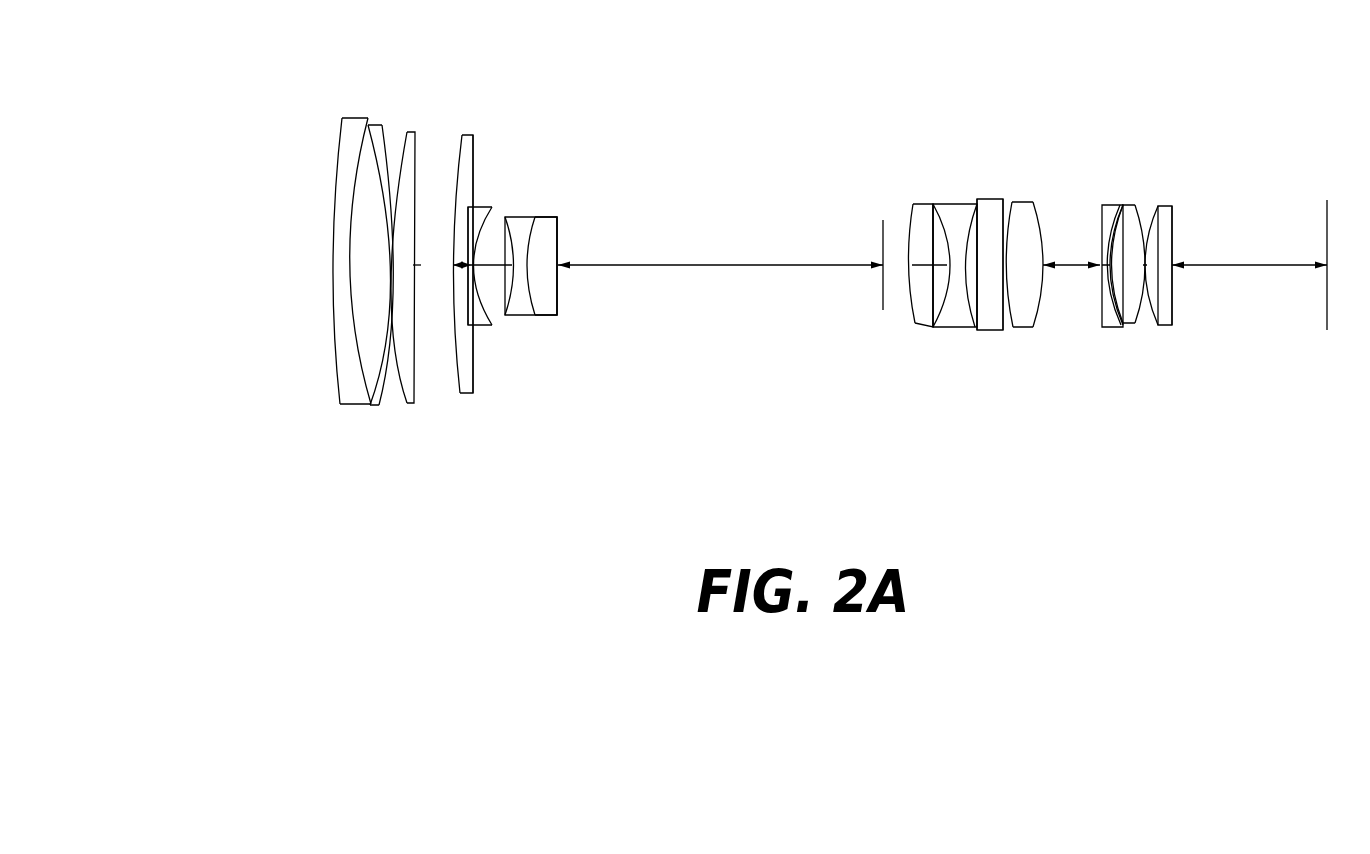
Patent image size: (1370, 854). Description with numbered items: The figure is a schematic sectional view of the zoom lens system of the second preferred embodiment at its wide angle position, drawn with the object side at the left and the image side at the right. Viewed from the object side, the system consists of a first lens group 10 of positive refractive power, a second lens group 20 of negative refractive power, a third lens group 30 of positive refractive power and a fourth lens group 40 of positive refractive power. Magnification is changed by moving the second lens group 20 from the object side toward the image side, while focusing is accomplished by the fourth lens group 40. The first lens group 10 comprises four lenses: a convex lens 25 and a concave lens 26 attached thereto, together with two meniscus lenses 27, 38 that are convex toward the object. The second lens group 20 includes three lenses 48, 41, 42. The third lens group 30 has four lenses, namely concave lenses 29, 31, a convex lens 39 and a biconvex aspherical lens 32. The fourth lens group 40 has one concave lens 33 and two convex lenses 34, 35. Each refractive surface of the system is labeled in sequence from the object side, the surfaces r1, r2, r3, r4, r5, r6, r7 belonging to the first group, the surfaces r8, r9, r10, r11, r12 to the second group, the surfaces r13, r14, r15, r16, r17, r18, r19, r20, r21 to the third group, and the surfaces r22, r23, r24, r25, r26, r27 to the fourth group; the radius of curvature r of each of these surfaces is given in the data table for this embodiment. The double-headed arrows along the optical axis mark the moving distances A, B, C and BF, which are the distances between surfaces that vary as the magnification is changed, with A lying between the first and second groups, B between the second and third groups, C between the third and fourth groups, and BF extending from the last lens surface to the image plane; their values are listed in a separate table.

The first lens group 10 is at (495, 53).
The second lens group 20 is at (480, 153).
The third lens group 30 is at (1087, 147).
The fourth lens group 40 is at (1030, 437).
The convex lens 25 is at (362, 254).
The concave lens 26 is at (321, 260).
The meniscus lens 27 is at (409, 266).
The meniscus lens 38 is at (475, 256).
The lens 48 is at (495, 278).
The lens 41 is at (545, 260).
The lens 42 is at (580, 270).
The concave lens 29 is at (888, 270).
The convex lens 39 is at (950, 257).
The concave lens 31 is at (997, 257).
The biconvex aspherical lens 32 is at (1037, 251).
The concave lens 33 is at (1098, 263).
The convex lens 34 is at (1145, 295).
The convex lens 35 is at (1200, 276).
The refractive surface r1 is at (332, 193).
The refractive surface r2 is at (338, 150).
The refractive surface r3 is at (378, 148).
The refractive surface r4 is at (393, 137).
The refractive surface r5 is at (412, 132).
The refractive surface r6 is at (451, 157).
The refractive surface r7 is at (473, 133).
The refractive surface r8 is at (476, 207).
The refractive surface r9 is at (483, 233).
The refractive surface r10 is at (512, 250).
The refractive surface r11 is at (533, 230).
The refractive surface r12 is at (557, 237).
The refractive surface r13 is at (880, 243).
The refractive surface r14 is at (910, 225).
The refractive surface r15 is at (930, 222).
The refractive surface r16 is at (945, 220).
The refractive surface r17 is at (970, 222).
The refractive surface r18 is at (980, 222).
The refractive surface r19 is at (1005, 222).
The refractive surface r20 is at (1013, 222).
The refractive surface r21 is at (1043, 245).
The refractive surface r22 is at (1108, 298).
The refractive surface r23 is at (1113, 318).
The refractive surface r24 is at (1120, 308).
The refractive surface r25 is at (1146, 290).
The refractive surface r26 is at (1152, 292).
The refractive surface r27 is at (1175, 282).
The moving distance A is at (461, 397).
The moving distance B is at (726, 265).
The moving distance C is at (1058, 273).
The back focal distance BF is at (1283, 270).